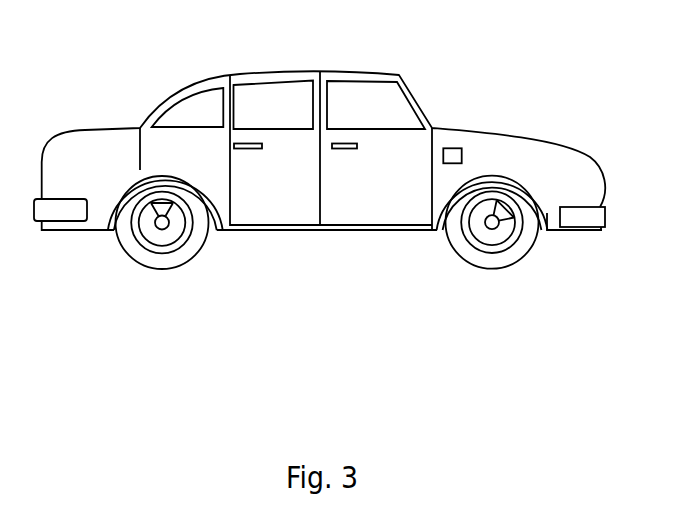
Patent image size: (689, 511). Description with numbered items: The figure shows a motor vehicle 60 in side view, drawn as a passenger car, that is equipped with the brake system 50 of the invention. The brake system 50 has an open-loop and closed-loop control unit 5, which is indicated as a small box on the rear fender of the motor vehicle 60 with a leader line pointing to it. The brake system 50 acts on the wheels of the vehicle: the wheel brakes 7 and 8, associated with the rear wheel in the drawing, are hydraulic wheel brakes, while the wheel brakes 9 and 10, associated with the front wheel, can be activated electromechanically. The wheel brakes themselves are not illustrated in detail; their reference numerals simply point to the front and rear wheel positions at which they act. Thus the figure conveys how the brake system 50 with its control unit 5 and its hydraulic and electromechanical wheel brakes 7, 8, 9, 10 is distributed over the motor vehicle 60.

The motor vehicle 60 is at (478, 62).
The brake system 50 is at (330, 266).
The wheel brake 10 is at (209, 256).
The wheel brake 9 is at (153, 207).
The wheel brake 8 is at (439, 256).
The wheel brake 7 is at (509, 222).
The open-loop and closed-loop control unit 5 is at (458, 147).